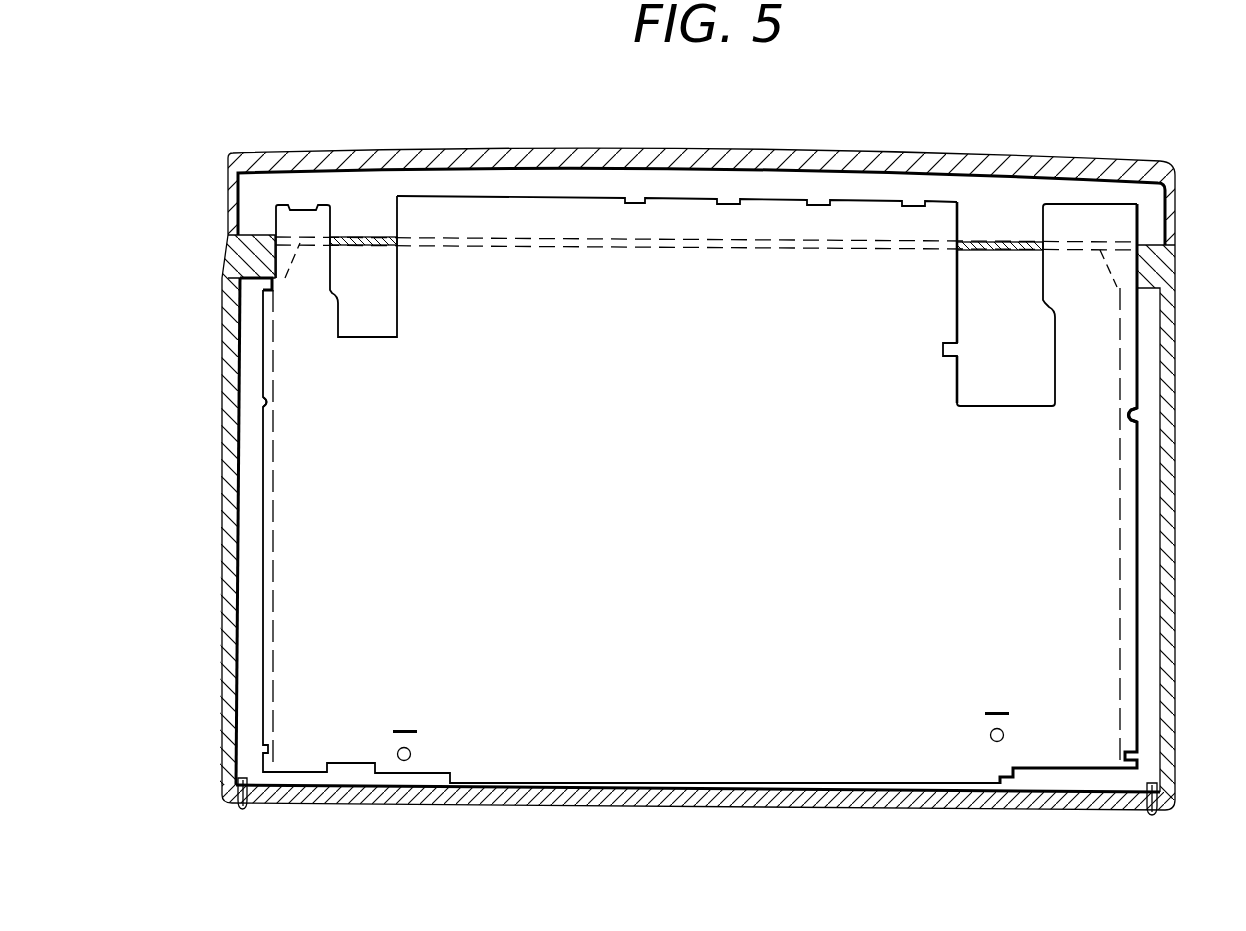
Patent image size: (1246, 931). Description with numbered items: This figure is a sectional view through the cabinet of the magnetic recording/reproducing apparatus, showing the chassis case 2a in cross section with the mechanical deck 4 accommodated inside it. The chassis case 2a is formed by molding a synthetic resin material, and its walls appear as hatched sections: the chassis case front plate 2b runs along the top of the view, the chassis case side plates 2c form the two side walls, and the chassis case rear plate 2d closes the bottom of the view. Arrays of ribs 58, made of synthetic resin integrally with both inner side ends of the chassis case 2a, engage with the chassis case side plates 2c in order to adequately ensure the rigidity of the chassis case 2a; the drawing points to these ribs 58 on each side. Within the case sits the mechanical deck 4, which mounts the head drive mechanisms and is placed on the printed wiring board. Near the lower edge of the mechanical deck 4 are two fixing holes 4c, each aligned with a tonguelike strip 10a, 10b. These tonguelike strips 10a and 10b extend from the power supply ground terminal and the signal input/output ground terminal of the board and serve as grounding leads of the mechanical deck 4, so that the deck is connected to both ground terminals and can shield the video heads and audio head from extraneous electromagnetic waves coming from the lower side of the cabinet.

The chassis case 2a is at (964, 145).
The chassis case front plate 2b is at (648, 147).
The chassis case side plates 2c is at (222, 543).
The chassis case rear plate 2d is at (596, 812).
The mechanical deck 4 is at (303, 710).
The fixing holes 4c is at (412, 752).
The tonguelike strip 10a is at (403, 725).
The tonguelike strip 10b is at (995, 706).
The ribs 58 is at (250, 400).